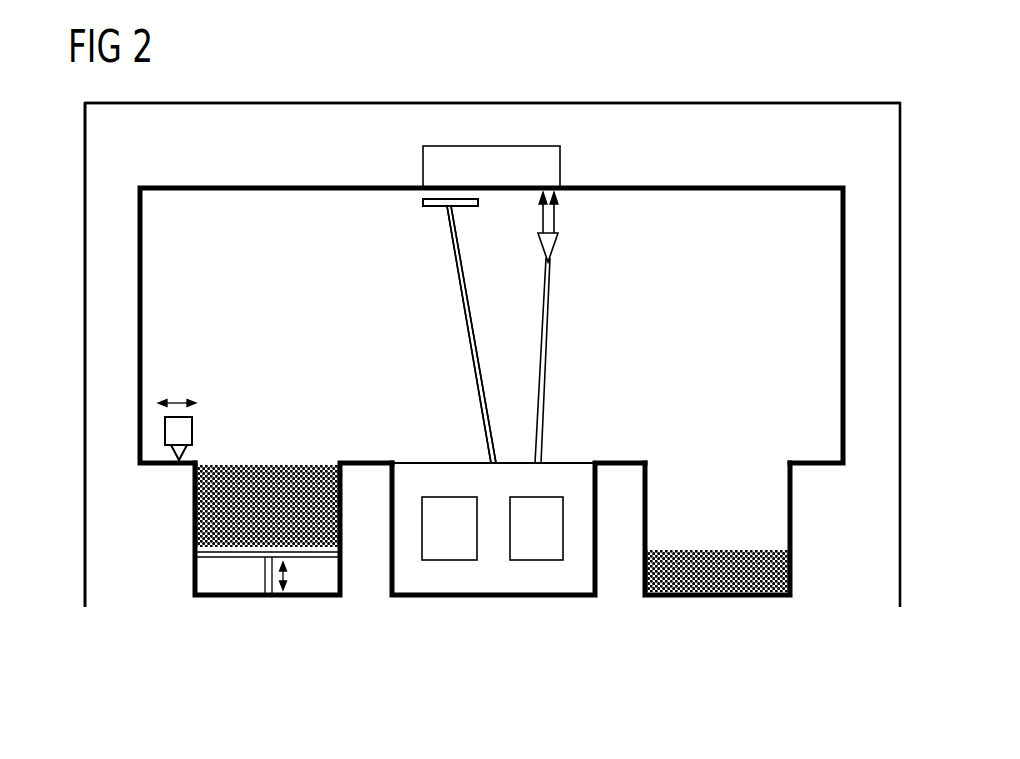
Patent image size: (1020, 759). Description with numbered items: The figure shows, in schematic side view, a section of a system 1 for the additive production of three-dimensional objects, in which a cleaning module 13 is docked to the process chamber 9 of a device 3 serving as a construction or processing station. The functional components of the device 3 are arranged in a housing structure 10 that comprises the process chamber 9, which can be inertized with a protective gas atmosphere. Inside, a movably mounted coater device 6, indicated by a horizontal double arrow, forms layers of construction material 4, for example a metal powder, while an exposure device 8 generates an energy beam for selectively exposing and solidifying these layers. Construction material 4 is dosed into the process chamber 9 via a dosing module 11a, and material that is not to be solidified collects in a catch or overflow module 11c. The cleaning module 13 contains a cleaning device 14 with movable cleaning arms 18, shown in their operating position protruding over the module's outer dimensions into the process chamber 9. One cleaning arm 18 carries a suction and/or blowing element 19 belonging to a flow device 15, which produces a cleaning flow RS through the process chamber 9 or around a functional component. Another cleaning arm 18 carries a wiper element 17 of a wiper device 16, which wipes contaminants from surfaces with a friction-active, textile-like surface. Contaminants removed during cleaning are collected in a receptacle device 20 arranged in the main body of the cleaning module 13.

The system 1 is at (788, 89).
The device 3 is at (706, 89).
The construction material 4 is at (196, 506).
The coater device 6 is at (163, 432).
The exposure device 8 is at (560, 165).
The process chamber 9 is at (822, 466).
The housing structure 10 is at (85, 320).
The dosing module 11a is at (234, 609).
The overflow module 11c is at (709, 609).
The cleaning module 13 is at (404, 609).
The cleaning device 14 is at (436, 263).
The flow device 15 is at (535, 562).
The wiper device 16 is at (415, 229).
The wiper element 17 is at (424, 200).
The cleaning arm 18 is at (473, 365).
The suction and/or blowing element 19 is at (556, 250).
The receptacle device 20 is at (447, 562).
The cleaning flow RS is at (559, 216).